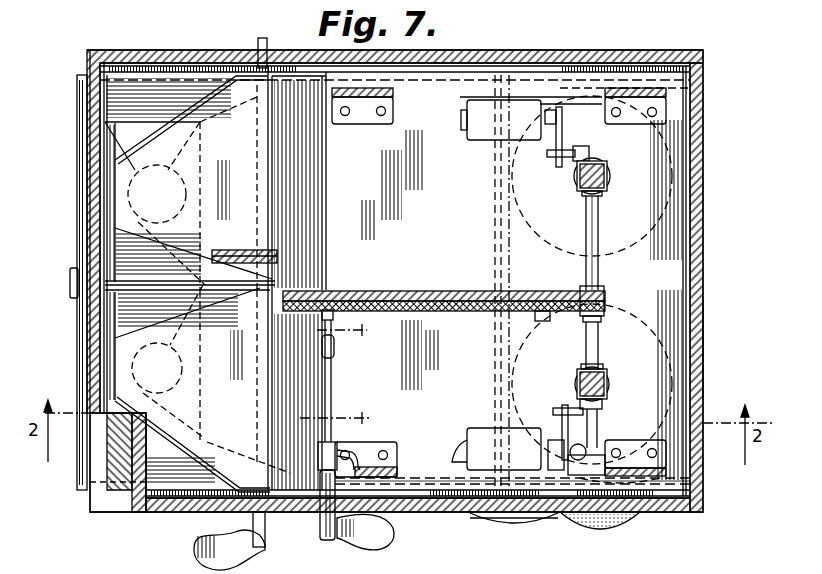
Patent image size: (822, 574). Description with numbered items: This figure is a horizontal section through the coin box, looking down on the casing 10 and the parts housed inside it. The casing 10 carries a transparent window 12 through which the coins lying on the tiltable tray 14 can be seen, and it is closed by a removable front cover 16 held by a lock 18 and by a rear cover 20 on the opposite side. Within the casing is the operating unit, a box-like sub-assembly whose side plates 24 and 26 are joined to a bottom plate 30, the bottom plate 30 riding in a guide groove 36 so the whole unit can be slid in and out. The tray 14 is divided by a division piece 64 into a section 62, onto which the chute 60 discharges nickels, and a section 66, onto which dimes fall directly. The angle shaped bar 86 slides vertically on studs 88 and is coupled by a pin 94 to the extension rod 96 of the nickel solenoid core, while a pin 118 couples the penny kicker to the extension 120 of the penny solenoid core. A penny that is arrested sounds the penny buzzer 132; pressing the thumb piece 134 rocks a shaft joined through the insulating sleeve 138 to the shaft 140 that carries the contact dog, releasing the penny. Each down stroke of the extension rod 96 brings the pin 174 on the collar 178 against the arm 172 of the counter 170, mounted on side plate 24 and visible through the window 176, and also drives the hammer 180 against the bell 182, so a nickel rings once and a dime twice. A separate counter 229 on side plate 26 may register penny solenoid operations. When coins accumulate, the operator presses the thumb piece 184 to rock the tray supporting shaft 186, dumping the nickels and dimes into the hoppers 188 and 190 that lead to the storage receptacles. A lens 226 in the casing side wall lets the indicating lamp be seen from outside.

The casing 10 is at (470, 50).
The transparent window 12 is at (120, 458).
The tiltable tray 14 is at (113, 205).
The front cover 16 is at (78, 180).
The lock 18 is at (70, 283).
The rear cover 20 is at (703, 345).
The side plate 24 is at (425, 478).
The side plate 26 is at (432, 92).
The bottom plate 30 is at (663, 268).
The guide groove 36 is at (580, 72).
The chute 60 is at (238, 250).
The section 62 is at (188, 187).
The division piece 64 is at (152, 283).
The section 66 is at (197, 384).
The angle shaped bar 86 is at (572, 291).
The studs 88 is at (545, 322).
The pin 94 is at (586, 342).
The extension rod 96 is at (604, 376).
The pin 118 is at (598, 236).
The extension 120 is at (607, 176).
The penny buzzer 132 is at (584, 116).
The thumb piece 134 is at (395, 541).
The insulating sleeve 138 is at (334, 348).
The shaft 140 is at (331, 390).
The counter 170 is at (486, 430).
The arm 172 is at (563, 405).
The pin 174 is at (556, 412).
The window 176 is at (525, 524).
The collar 178 is at (605, 396).
The hammer 180 is at (604, 446).
The bell 182 is at (455, 446).
The thumb piece 184 is at (196, 552).
The tray supporting shaft 186 is at (258, 52).
The hopper 188 is at (112, 133).
The hopper 190 is at (112, 322).
The lens 226 is at (620, 532).
The separate counter 229 is at (488, 130).